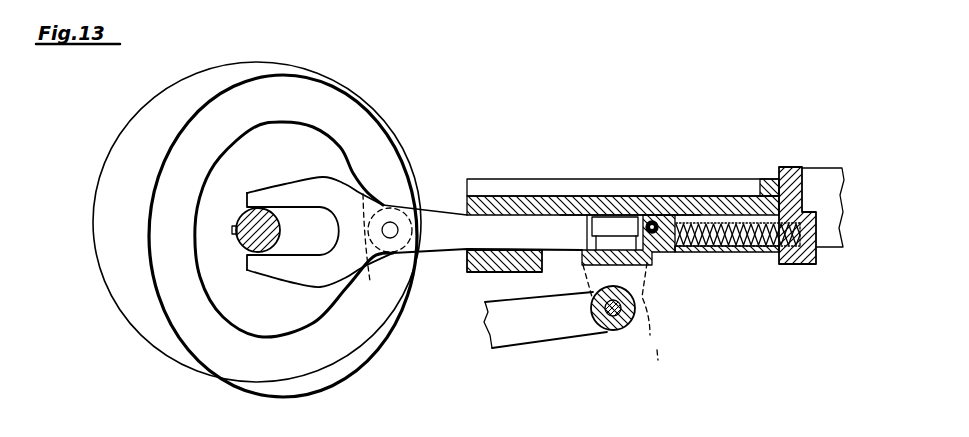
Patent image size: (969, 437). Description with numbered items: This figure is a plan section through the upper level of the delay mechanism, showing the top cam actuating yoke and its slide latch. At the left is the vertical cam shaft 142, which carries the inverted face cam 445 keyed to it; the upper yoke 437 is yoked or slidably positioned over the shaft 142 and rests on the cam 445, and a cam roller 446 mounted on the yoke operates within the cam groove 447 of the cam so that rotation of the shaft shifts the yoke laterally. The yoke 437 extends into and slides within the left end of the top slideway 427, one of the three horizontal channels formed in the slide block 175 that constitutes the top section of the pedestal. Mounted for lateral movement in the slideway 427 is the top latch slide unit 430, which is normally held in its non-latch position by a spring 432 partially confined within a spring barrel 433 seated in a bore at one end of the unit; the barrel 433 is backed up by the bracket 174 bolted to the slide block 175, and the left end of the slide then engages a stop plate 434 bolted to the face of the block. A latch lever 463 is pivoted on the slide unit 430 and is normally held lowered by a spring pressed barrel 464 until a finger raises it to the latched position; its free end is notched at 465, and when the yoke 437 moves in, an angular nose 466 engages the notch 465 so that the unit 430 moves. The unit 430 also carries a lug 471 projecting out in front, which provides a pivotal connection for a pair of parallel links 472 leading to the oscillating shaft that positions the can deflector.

The cam shaft 142 is at (250, 238).
The bracket 174 is at (828, 162).
The slide block 175 is at (515, 196).
The top slideway 427 is at (556, 210).
The top latch slide unit 430 is at (733, 222).
The spring 432 is at (760, 252).
The spring barrel 433 is at (812, 262).
The stop plate 434 is at (497, 268).
The upper yoke 437 is at (430, 219).
The inverted face cam 445 is at (354, 93).
The cam roller 446 is at (384, 250).
The cam groove 447 is at (309, 82).
The latch lever 463 is at (615, 233).
The spring pressed barrel 464 is at (660, 252).
The notch 465 is at (617, 203).
The angular nose 466 is at (587, 243).
The lug 471 is at (627, 323).
The parallel links 472 is at (531, 335).